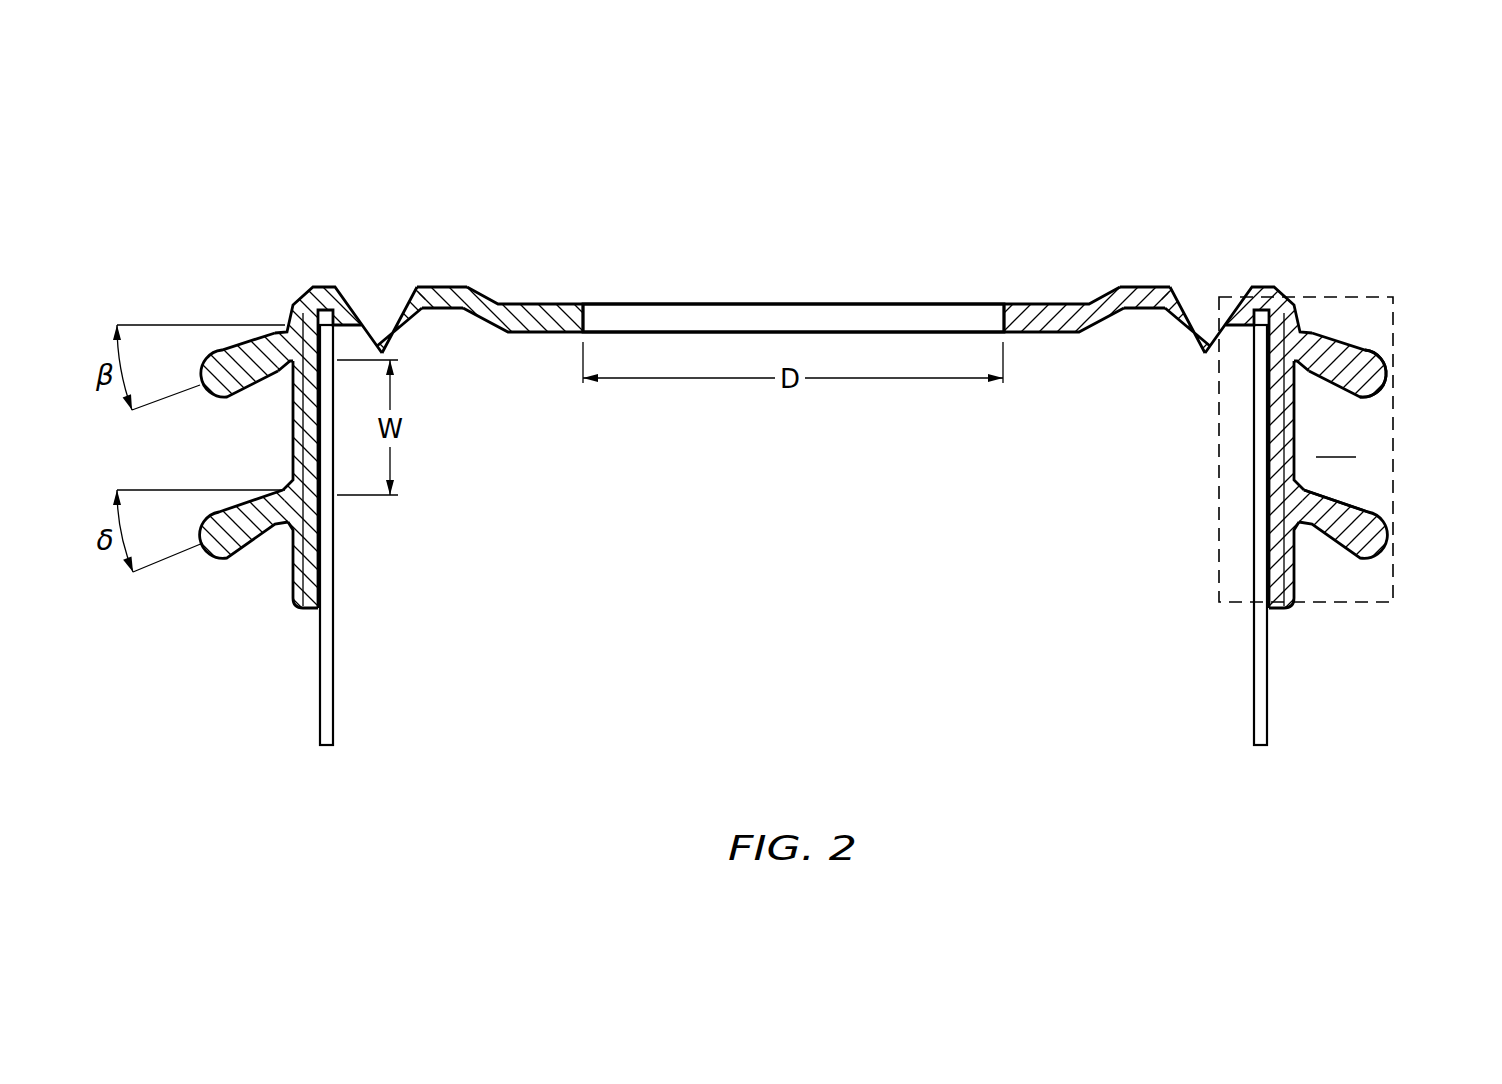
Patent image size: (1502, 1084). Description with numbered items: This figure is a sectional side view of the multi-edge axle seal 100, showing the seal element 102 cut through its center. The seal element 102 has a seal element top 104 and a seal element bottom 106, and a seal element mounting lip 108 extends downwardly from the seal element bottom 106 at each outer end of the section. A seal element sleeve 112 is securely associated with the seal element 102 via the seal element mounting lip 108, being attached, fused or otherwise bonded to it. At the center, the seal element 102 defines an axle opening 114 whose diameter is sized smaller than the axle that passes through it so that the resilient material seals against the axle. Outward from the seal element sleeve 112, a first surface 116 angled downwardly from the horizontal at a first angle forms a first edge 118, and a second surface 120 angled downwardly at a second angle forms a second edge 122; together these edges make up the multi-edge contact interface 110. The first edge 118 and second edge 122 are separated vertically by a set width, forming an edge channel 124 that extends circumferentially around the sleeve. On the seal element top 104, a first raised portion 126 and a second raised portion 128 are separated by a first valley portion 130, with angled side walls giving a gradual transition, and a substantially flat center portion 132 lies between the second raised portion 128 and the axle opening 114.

The multi-edge axle seal 100 is at (1212, 201).
The seal element 102 is at (1040, 304).
The seal element top 104 is at (783, 304).
The seal element bottom 106 is at (258, 550).
The seal element mounting lip 108 is at (312, 608).
The multi-edge contact interface 110 is at (1363, 602).
The seal element sleeve 112 is at (333, 722).
The axle opening 114 is at (903, 315).
The first surface 116 is at (1325, 345).
The first edge 118 is at (1385, 378).
The second surface 120 is at (1342, 513).
The second edge 122 is at (1390, 550).
The edge channel 124 is at (1336, 442).
The first raised portion 126 is at (318, 288).
The second raised portion 128 is at (437, 288).
The first valley portion 130 is at (376, 330).
The substantially flat center portion 132 is at (540, 304).